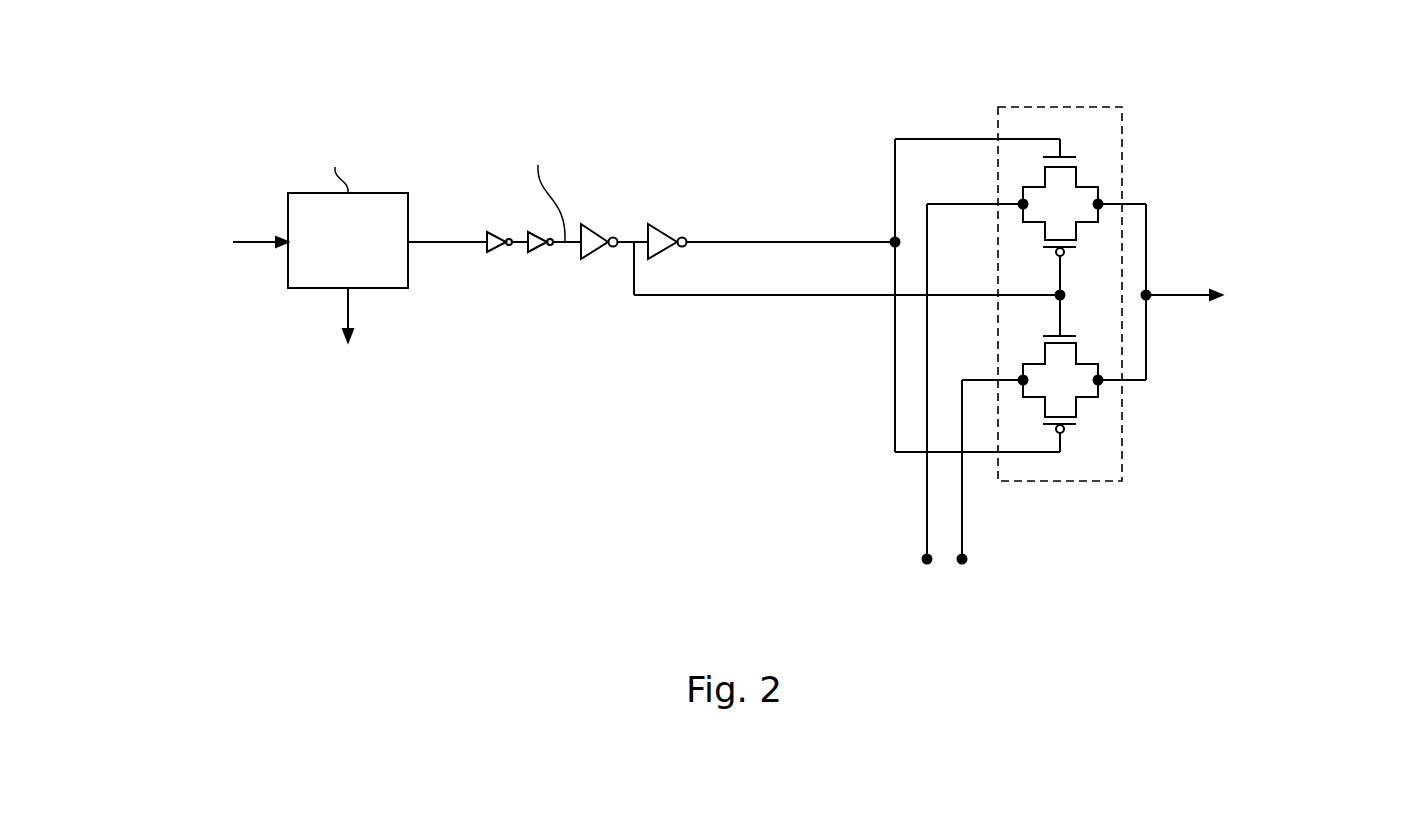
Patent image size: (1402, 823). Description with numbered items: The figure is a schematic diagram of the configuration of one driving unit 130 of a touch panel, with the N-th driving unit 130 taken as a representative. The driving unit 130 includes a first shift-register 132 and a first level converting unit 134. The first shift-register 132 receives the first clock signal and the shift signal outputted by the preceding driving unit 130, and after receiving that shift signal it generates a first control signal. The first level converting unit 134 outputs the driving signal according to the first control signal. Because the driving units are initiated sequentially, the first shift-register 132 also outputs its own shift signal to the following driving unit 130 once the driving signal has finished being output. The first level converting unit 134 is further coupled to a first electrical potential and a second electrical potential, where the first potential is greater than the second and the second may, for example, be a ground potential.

The driving unit 130 is at (178, 60).
The first shift-register 132 is at (368, 255).
The first level converting unit 134 is at (1055, 107).